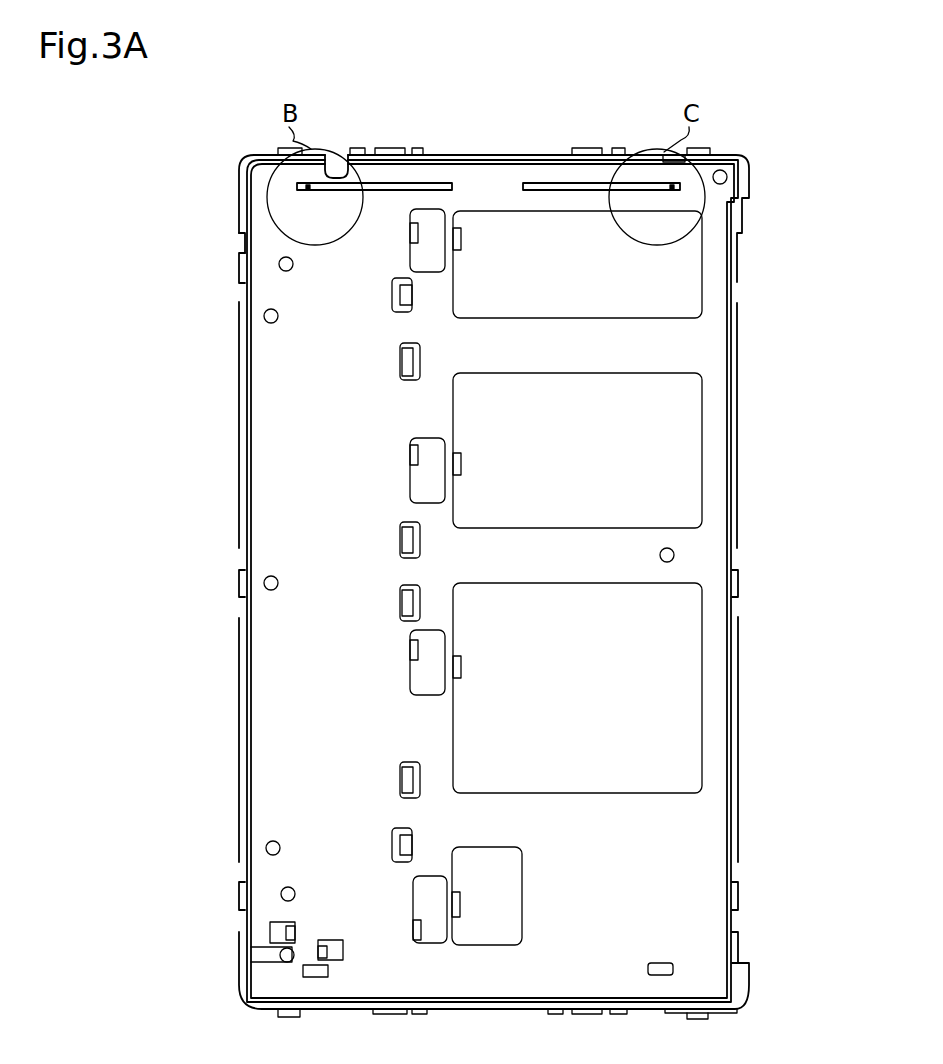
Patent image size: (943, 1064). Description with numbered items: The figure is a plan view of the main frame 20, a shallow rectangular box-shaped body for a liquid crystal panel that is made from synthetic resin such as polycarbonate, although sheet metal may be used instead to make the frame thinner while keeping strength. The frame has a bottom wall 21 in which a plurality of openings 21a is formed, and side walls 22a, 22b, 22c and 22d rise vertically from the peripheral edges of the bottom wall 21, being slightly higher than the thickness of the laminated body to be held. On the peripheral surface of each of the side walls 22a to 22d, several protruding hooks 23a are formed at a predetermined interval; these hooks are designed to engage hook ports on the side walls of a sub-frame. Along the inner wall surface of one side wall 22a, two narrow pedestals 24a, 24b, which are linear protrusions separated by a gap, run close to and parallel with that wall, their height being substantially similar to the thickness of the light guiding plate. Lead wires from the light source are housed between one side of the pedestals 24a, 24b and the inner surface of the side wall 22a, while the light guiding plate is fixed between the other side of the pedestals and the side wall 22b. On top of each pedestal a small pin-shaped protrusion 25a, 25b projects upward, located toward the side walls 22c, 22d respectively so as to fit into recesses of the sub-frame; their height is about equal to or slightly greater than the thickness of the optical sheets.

The main frame 20 is at (786, 206).
The bottom wall 21 is at (712, 350).
The openings 21a is at (688, 270).
The side wall 22a is at (593, 160).
The side wall 22b is at (487, 1004).
The side wall 22c is at (738, 638).
The side wall 22d is at (239, 750).
The protruding hooks 23a is at (239, 268).
The pedestal 24a is at (412, 187).
The pedestal 24b is at (547, 187).
The small pin-shaped protrusion 25a is at (308, 187).
The small pin-shaped protrusion 25b is at (672, 186).